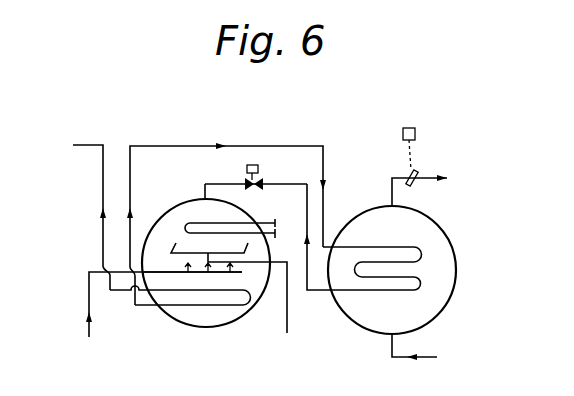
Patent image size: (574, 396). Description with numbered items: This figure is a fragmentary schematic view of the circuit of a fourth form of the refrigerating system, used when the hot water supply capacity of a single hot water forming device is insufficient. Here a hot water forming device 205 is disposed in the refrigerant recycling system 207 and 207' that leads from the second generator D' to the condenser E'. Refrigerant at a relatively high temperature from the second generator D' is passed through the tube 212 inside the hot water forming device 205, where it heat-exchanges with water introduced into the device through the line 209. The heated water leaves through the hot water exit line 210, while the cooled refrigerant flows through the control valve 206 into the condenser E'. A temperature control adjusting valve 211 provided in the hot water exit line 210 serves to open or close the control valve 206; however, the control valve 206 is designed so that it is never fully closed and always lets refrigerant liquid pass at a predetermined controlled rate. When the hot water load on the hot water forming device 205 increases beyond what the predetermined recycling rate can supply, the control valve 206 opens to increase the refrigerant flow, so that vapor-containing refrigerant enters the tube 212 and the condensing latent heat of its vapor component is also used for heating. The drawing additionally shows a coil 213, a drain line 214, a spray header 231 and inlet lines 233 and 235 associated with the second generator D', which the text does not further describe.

The hot water forming device 205 is at (446, 248).
The control valve 206 is at (247, 168).
The refrigerant recycling system line 207 is at (234, 206).
The refrigerant recycling system line 207' is at (345, 229).
The line 209 is at (392, 359).
The hot water exit line 210 is at (423, 178).
The temperature control adjusting valve 211 is at (415, 130).
The tube 212 is at (420, 285).
The cooling coil 213 is at (231, 306).
The drain line 214 is at (287, 333).
The spray header 231 is at (156, 271).
The spray liquid inlet line 233 is at (88, 298).
The inlet line 235 is at (85, 145).
The second generator D' is at (206, 276).
The condenser E' is at (230, 223).